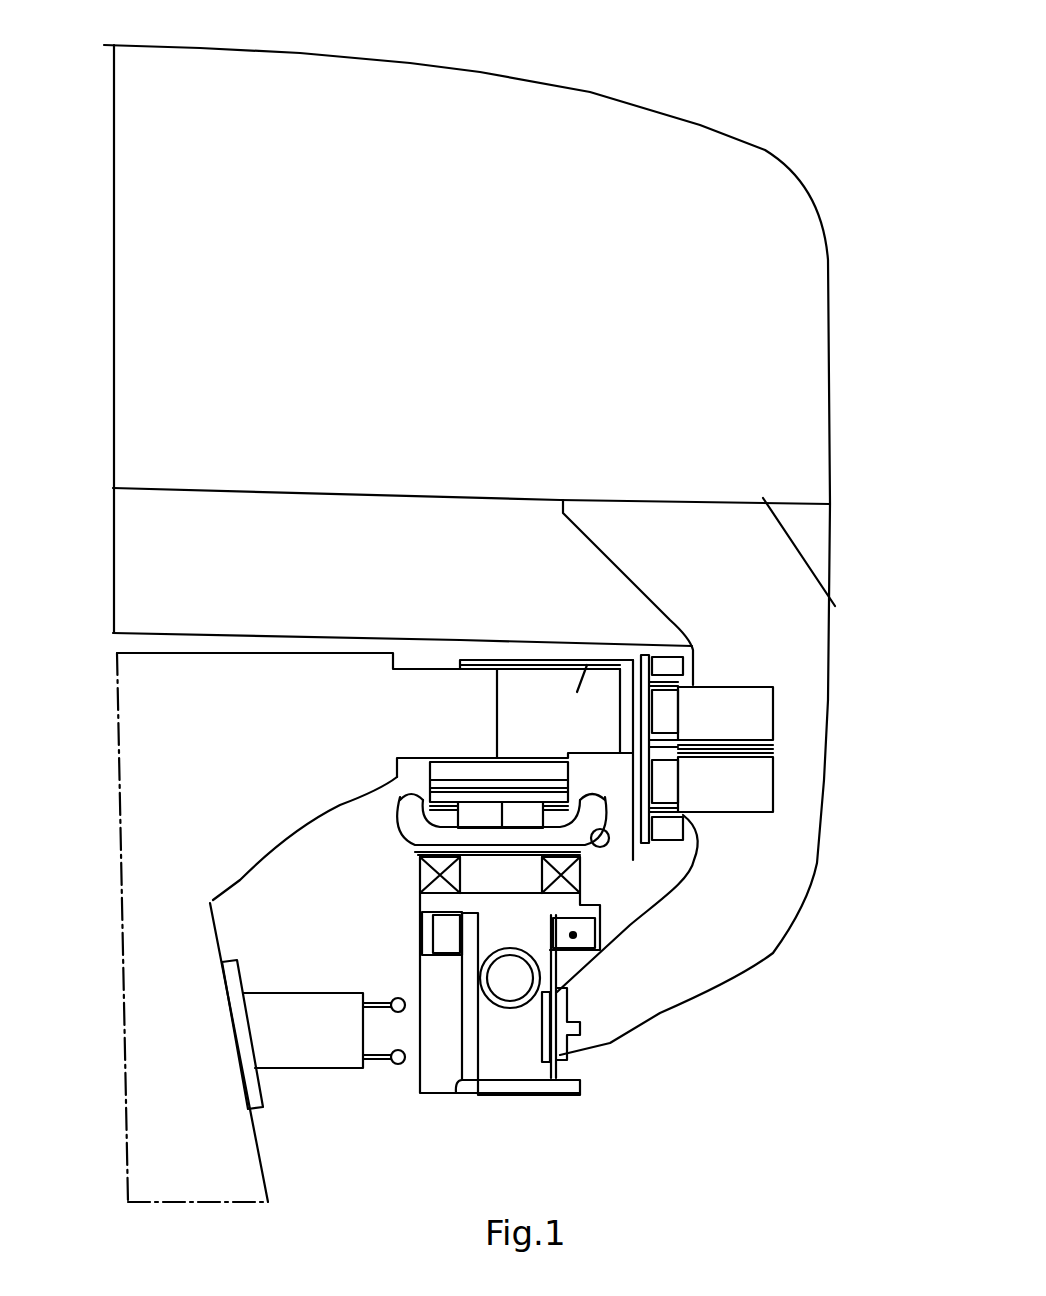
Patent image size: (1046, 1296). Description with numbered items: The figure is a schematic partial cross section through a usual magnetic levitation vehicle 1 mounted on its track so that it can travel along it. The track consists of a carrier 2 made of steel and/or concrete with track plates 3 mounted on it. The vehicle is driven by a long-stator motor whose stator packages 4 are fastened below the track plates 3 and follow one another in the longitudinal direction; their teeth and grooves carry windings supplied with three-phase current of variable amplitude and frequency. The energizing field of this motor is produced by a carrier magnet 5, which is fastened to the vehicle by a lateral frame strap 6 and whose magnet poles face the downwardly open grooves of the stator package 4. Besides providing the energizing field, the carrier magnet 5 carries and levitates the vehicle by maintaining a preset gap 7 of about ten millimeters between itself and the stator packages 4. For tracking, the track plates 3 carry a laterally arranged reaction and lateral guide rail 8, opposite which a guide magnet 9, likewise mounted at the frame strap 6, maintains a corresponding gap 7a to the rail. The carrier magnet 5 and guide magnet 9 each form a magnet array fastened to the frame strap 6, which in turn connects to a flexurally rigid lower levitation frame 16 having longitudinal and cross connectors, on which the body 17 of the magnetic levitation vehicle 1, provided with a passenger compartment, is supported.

The magnetic levitation vehicle 1 is at (483, 70).
The carrier 2 is at (163, 1062).
The track plates 3 is at (577, 692).
The stator packages 4 is at (480, 818).
The carrier magnet 5 is at (512, 878).
The frame strap 6 is at (762, 625).
The gap 7 is at (400, 848).
The gap 7a is at (637, 847).
The reaction and lateral guide rail 8 is at (627, 763).
The guide magnets 9 is at (678, 737).
The levitation frame 16 is at (178, 578).
The body 17 is at (168, 283).